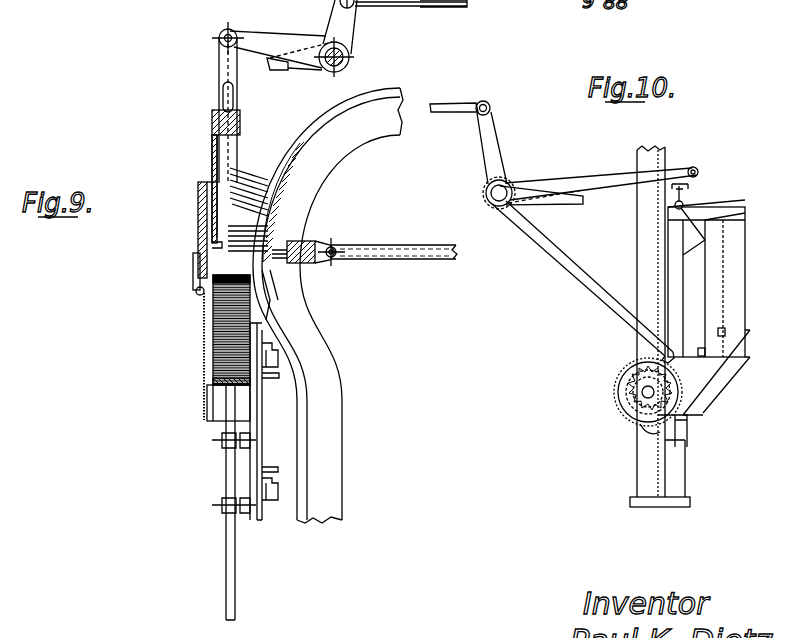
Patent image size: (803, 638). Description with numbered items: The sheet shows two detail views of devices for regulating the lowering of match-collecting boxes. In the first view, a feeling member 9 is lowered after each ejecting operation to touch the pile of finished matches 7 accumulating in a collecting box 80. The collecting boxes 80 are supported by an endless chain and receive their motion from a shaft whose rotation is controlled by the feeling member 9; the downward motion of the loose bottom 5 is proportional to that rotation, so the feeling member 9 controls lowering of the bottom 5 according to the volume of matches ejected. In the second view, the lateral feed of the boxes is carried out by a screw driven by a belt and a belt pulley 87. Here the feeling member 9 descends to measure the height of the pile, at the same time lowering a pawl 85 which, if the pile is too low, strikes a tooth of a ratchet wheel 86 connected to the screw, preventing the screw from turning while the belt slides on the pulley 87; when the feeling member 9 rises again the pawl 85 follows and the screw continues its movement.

In FIG. 9, the feeling member 9 is at (212, 163).
In FIG. 10, the feeling member 9 is at (710, 257).
In FIG. 9, the pile of finished matches 7 is at (212, 337).
In FIG. 9, the bottom 5 is at (210, 388).
In FIG. 9, the collecting box 80 is at (222, 415).
In FIG. 10, the pawl 85 is at (645, 338).
In FIG. 10, the ratchet wheel 86 is at (627, 402).
In FIG. 10, the belt pulley 87 is at (613, 378).